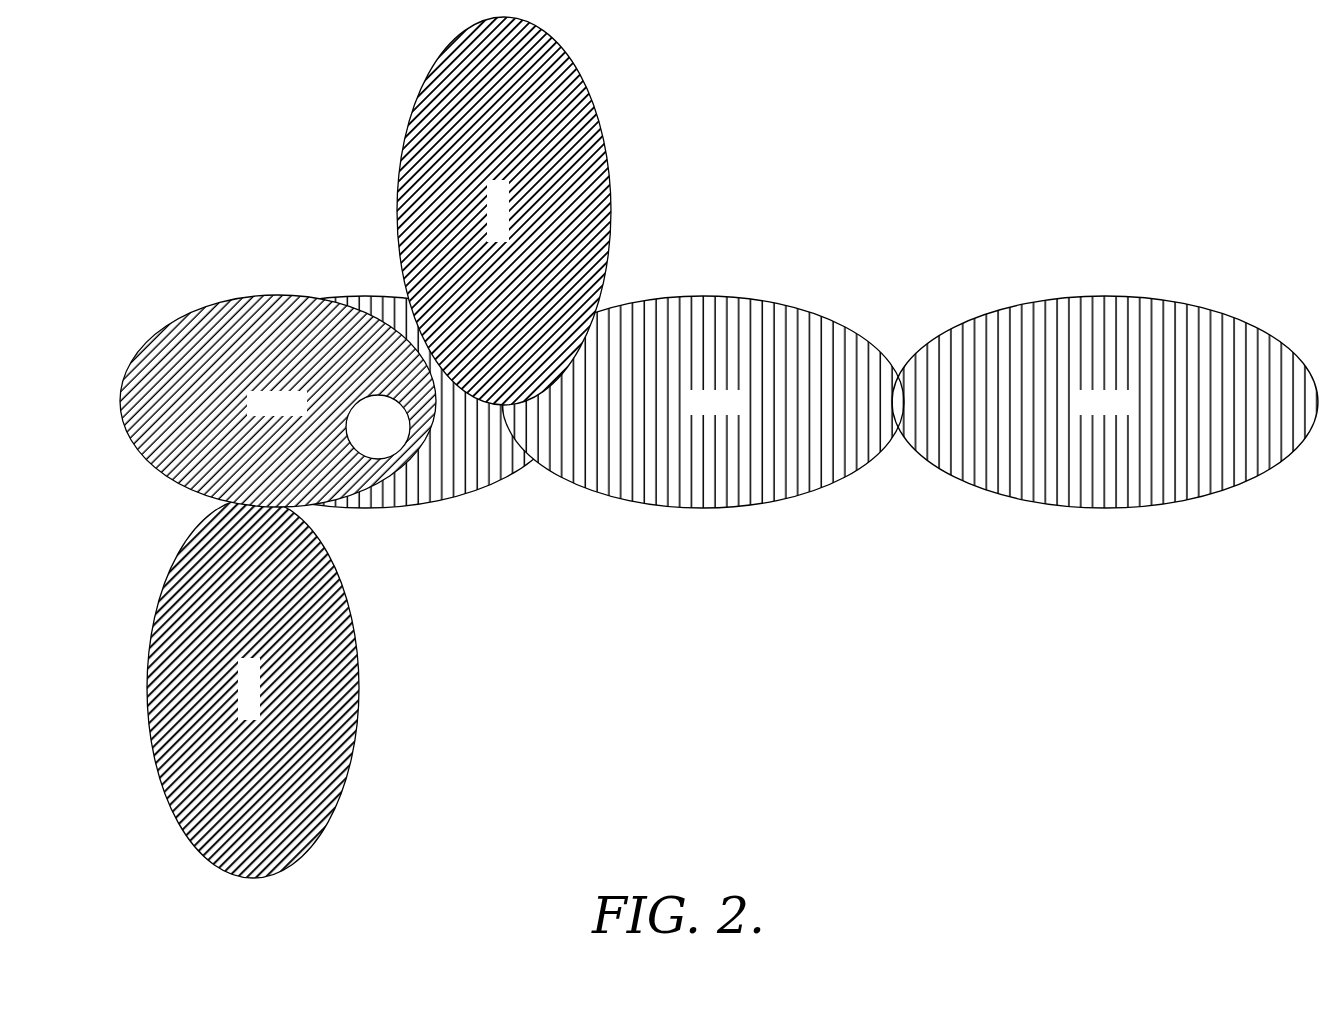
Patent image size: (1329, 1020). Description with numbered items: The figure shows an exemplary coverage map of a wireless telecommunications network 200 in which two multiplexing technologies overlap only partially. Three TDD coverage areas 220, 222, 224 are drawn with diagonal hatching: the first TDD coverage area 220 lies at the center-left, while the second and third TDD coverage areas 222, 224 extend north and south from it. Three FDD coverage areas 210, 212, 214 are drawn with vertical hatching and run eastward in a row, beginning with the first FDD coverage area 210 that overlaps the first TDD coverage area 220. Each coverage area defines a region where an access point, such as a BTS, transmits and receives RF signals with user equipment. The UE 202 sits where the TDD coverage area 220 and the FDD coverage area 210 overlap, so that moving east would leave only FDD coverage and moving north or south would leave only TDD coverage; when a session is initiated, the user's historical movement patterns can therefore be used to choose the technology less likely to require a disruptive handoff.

The wireless telecommunications network 200 is at (719, 447).
The UE 202 is at (378, 427).
The FDD coverage area 210 is at (332, 294).
The FDD coverage area 212 is at (690, 296).
The FDD coverage area 214 is at (1057, 296).
The TDD coverage area 220 is at (215, 303).
The TDD coverage area 222 is at (556, 48).
The TDD coverage area 224 is at (339, 574).